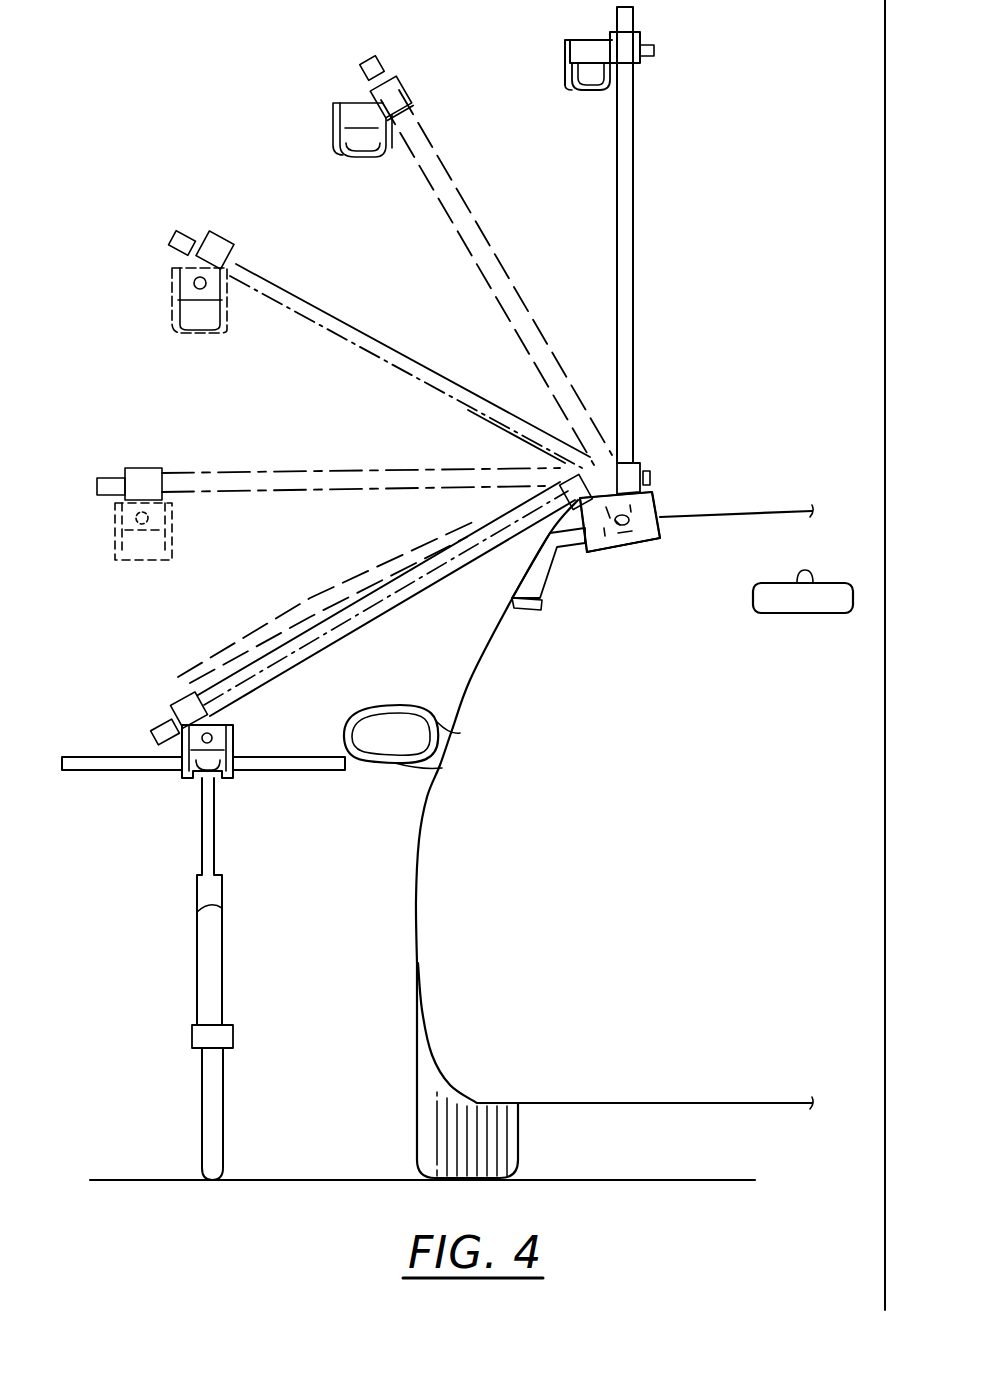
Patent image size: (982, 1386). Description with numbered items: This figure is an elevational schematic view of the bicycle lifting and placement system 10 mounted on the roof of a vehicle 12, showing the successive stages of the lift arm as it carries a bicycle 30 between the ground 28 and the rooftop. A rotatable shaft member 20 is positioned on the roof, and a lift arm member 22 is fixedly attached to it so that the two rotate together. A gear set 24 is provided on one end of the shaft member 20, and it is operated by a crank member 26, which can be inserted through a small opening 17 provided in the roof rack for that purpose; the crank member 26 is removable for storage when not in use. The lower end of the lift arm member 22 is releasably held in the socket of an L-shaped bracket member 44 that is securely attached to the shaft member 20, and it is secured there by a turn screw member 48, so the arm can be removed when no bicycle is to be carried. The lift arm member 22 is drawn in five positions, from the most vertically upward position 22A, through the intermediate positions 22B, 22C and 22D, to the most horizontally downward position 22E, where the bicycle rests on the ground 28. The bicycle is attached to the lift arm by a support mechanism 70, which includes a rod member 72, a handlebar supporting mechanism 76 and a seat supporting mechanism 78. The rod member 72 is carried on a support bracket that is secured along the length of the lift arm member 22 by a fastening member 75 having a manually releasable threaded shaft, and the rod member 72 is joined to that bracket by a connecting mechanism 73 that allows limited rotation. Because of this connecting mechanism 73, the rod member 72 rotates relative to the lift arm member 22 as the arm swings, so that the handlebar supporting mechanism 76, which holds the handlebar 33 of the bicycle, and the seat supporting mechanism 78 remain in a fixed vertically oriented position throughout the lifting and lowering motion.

The lifting and placement system 10 is at (718, 402).
The vehicle 12 is at (420, 906).
The small opening 17 is at (577, 557).
The rotatable shaft member 20 is at (628, 518).
The lift arm member 22 is at (636, 220).
The most vertically upward position of lift arm member 22A is at (634, 302).
The second position of lift arm member 22B is at (487, 245).
The third position of lift arm member 22C is at (352, 328).
The fourth position of lift arm member 22D is at (315, 470).
The most horizontally downward position of lift arm member 22E is at (380, 606).
The gear set 24 is at (660, 545).
The crank member 26 is at (560, 553).
The ground 28 is at (291, 1178).
The bicycle 30 is at (224, 904).
The handlebar 33 is at (287, 757).
The L-shaped bracket member 44 is at (633, 462).
The turn screw member 48 is at (658, 472).
The support mechanism 70 is at (640, 33).
The rod member 72 is at (646, 62).
The connecting mechanism 73 is at (246, 276).
The fastening member 75 is at (657, 51).
The handlebar supporting mechanism 76 is at (566, 53).
The seat supporting mechanism 78 is at (597, 92).